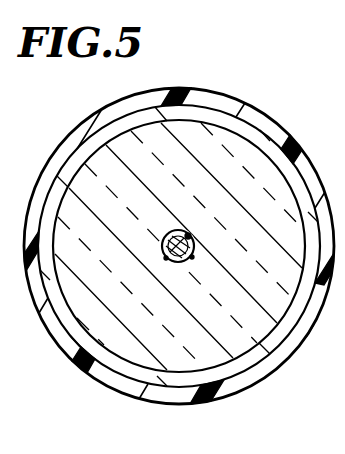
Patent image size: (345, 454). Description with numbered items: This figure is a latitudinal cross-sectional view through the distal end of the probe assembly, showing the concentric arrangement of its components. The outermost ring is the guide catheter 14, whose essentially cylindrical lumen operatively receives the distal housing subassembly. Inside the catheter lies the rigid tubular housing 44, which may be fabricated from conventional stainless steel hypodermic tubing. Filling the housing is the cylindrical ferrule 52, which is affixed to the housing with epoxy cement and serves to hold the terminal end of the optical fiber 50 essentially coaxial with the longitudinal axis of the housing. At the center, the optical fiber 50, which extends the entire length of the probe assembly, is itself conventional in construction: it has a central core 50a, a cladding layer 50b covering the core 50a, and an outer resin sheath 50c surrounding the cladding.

The guide catheter 14 is at (94, 373).
The rigid tubular housing 44 is at (262, 136).
The optical fiber 50 is at (172, 221).
The central core 50a is at (189, 233).
The cladding layer 50b is at (192, 258).
The outer resin sheath 50c is at (166, 259).
The cylindrical ferrule 52 is at (203, 160).